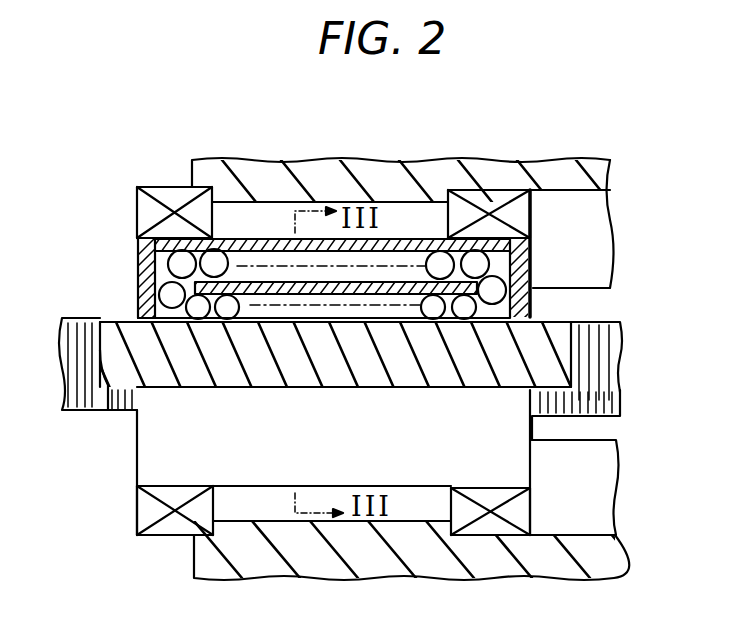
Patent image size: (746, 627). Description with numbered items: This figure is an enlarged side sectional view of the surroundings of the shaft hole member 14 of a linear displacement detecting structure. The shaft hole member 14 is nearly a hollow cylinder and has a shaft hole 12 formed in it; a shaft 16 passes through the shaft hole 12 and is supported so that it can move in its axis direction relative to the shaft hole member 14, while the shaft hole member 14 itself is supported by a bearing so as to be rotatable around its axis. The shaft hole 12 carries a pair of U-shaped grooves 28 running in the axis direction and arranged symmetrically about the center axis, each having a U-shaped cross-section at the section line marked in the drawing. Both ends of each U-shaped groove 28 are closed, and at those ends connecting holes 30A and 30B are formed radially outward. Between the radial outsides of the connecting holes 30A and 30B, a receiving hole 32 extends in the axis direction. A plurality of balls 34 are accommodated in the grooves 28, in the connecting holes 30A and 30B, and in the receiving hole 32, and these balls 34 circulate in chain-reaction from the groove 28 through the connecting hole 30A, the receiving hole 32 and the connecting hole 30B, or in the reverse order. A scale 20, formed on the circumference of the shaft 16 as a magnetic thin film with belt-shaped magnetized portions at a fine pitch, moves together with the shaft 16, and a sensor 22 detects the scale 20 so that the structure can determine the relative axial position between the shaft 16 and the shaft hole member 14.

The shaft hole 12 is at (573, 328).
The shaft hole member 14 is at (153, 456).
The shaft 16 is at (625, 343).
The scale 20 is at (606, 400).
The sensor 22 is at (598, 488).
The U-shaped groove 28 is at (271, 283).
The connecting hole 30A is at (537, 250).
The connecting hole 30B is at (157, 265).
The receiving hole 32 is at (386, 268).
The ball 34 is at (470, 262).